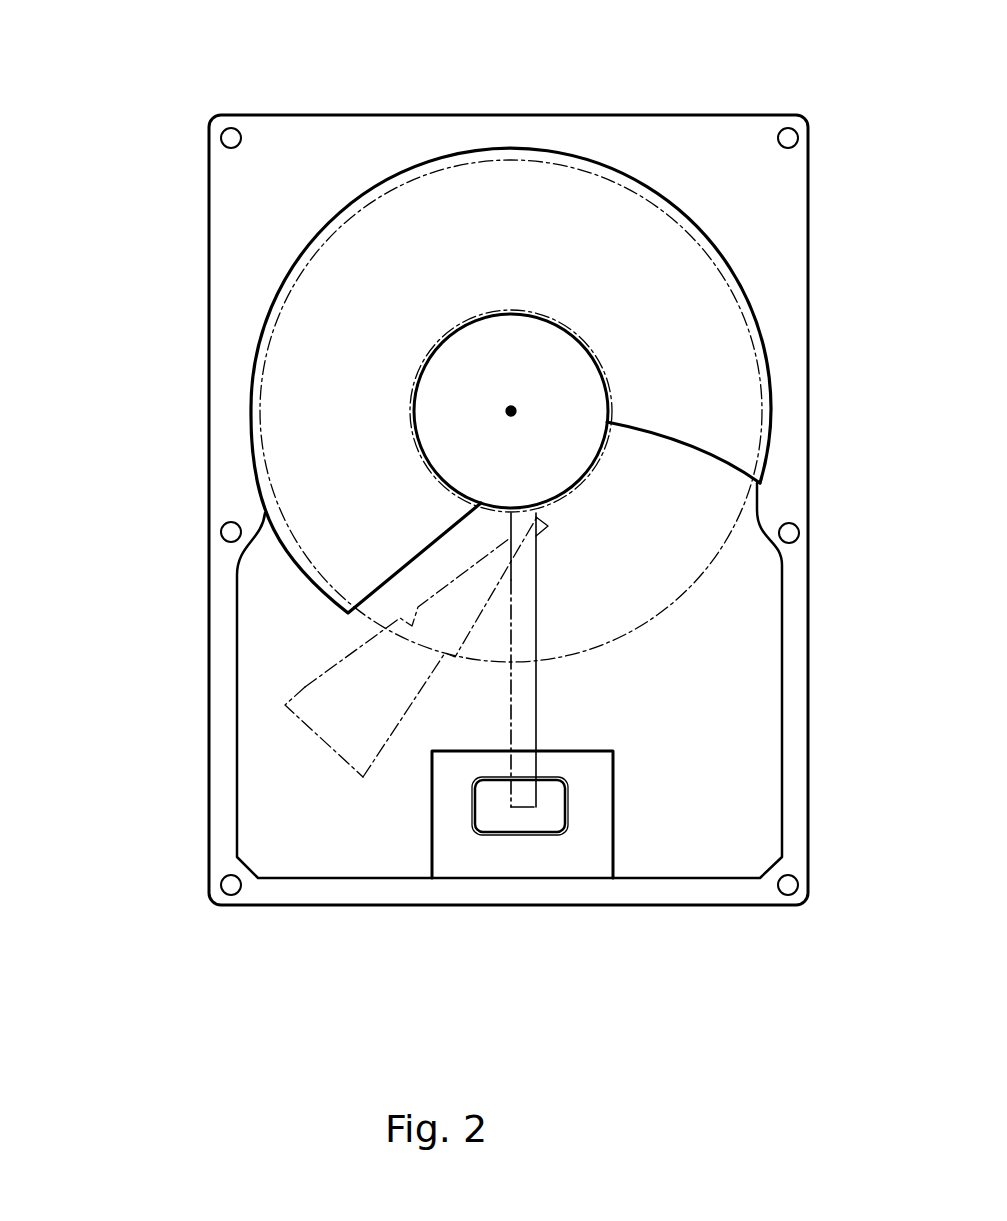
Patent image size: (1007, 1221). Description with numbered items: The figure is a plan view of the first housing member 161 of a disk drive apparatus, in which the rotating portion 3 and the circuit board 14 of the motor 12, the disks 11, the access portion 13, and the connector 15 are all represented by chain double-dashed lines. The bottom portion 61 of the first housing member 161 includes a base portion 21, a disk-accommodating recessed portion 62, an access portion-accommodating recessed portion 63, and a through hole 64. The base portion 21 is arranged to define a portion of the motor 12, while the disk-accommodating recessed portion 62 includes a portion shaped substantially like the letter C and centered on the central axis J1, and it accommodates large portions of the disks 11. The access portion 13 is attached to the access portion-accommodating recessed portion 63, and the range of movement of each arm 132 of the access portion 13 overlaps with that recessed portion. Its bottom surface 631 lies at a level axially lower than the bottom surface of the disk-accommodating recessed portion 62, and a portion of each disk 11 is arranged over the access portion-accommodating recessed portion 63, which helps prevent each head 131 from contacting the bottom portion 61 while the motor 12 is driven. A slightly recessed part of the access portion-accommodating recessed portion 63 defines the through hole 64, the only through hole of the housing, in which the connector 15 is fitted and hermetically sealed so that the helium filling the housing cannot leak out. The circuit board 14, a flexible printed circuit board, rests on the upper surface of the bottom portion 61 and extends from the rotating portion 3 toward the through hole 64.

The first housing member 161 is at (211, 73).
The motor 12 is at (595, 58).
The disks 11 is at (283, 268).
The rotating portion 3 is at (512, 312).
The base portion 21 is at (440, 375).
The central axis J1 is at (510, 411).
The access portion 13 is at (370, 660).
The head 131 is at (500, 527).
The arm 132 is at (483, 578).
The circuit board 14 is at (523, 762).
The connector 15 is at (472, 808).
The bottom portion 61 is at (122, 180).
The disk-accommodating recessed portion 62 is at (325, 258).
The access portion-accommodating recessed portion 63 is at (300, 857).
The bottom surface 631 is at (350, 855).
The through hole 64 is at (558, 818).